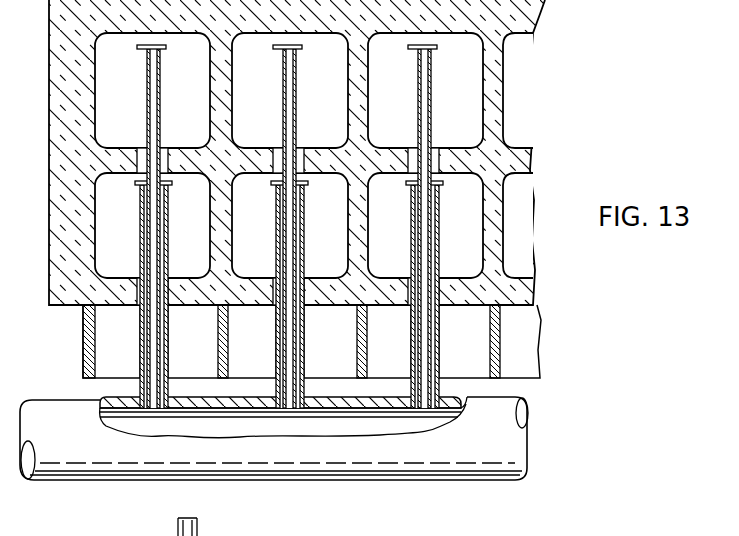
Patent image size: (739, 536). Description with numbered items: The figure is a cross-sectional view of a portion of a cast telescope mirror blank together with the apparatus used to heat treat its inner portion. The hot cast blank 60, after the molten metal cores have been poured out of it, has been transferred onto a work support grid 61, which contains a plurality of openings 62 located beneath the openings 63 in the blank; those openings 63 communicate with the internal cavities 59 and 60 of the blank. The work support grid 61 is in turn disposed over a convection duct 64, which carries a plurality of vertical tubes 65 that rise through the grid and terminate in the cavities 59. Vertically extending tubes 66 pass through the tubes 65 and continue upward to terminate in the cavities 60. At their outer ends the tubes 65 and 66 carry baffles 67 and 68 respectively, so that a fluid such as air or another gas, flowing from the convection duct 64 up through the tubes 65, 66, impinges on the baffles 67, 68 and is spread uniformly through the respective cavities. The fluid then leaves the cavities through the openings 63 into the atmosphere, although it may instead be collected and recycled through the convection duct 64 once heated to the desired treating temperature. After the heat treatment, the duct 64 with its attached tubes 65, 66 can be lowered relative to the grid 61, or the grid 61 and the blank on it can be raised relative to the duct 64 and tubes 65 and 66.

The cavities 59 is at (196, 229).
The cast blank 60 is at (196, 79).
The work support grid 61 is at (82, 330).
The openings 62 is at (207, 344).
The openings 63 is at (170, 306).
The convection duct 64 is at (80, 437).
The vertical tubes 65 is at (168, 246).
The vertically extending tubes 66 is at (160, 125).
The baffles 67 is at (172, 183).
The baffles 68 is at (166, 48).